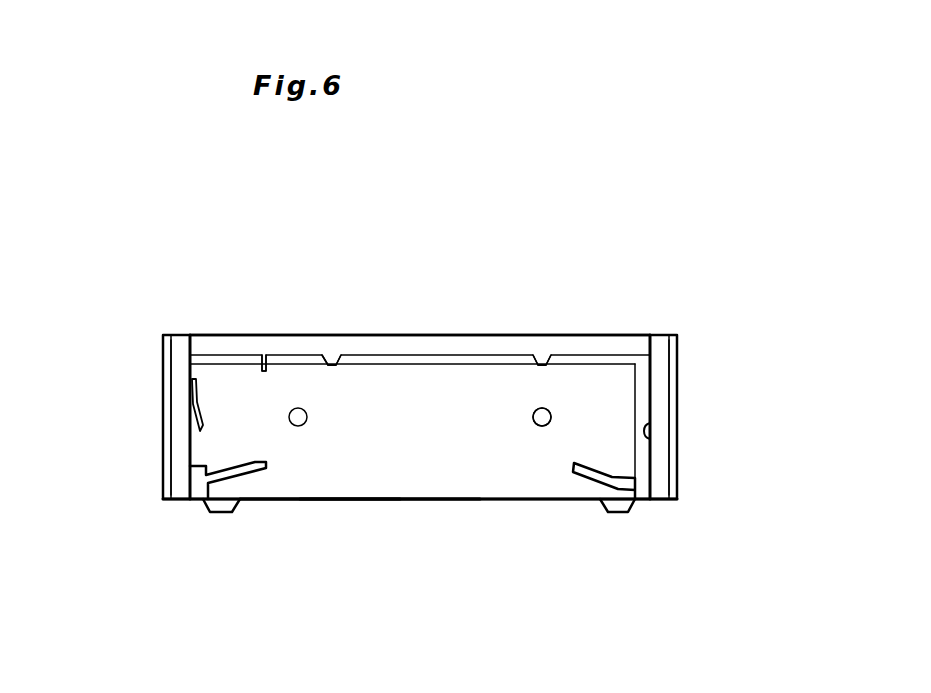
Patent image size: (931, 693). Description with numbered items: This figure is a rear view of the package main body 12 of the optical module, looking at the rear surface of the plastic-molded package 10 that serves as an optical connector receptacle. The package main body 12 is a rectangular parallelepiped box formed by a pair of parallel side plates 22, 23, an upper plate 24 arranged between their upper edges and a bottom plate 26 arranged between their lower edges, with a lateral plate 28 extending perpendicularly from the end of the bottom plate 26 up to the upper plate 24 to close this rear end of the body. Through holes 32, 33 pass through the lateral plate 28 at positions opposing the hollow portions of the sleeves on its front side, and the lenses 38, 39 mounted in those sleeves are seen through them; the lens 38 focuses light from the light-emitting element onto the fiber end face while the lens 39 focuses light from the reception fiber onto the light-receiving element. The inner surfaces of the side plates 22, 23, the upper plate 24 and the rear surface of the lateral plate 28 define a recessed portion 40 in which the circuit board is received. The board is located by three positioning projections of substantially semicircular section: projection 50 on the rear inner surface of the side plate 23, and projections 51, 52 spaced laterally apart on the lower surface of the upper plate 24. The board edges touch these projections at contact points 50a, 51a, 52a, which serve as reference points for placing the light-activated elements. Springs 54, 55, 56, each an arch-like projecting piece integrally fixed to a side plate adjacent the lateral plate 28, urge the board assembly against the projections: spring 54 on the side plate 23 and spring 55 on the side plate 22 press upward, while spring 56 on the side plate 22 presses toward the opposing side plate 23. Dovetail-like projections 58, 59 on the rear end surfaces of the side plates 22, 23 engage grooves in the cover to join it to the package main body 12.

The package 10 is at (657, 316).
The package main body 12 is at (591, 334).
The side plate 22 is at (167, 409).
The side plate 23 is at (678, 413).
The upper plate 24 is at (460, 346).
The bottom plate 26 is at (470, 503).
The lateral plate 28 is at (388, 473).
The through hole 32 is at (298, 427).
The through hole 33 is at (540, 427).
The lens 38 is at (298, 408).
The lens 39 is at (534, 412).
The recessed portion 40 is at (264, 354).
The positioning projection 50 is at (652, 432).
The contact point 50a is at (646, 431).
The positioning projection 51 is at (335, 356).
The contact point 51a is at (335, 368).
The positioning projection 52 is at (540, 356).
The contact point 52a is at (541, 368).
The spring 54 is at (590, 479).
The spring 55 is at (258, 476).
The spring 56 is at (202, 418).
The dovetail-like projection 58 is at (178, 352).
The dovetail-like projection 59 is at (660, 372).